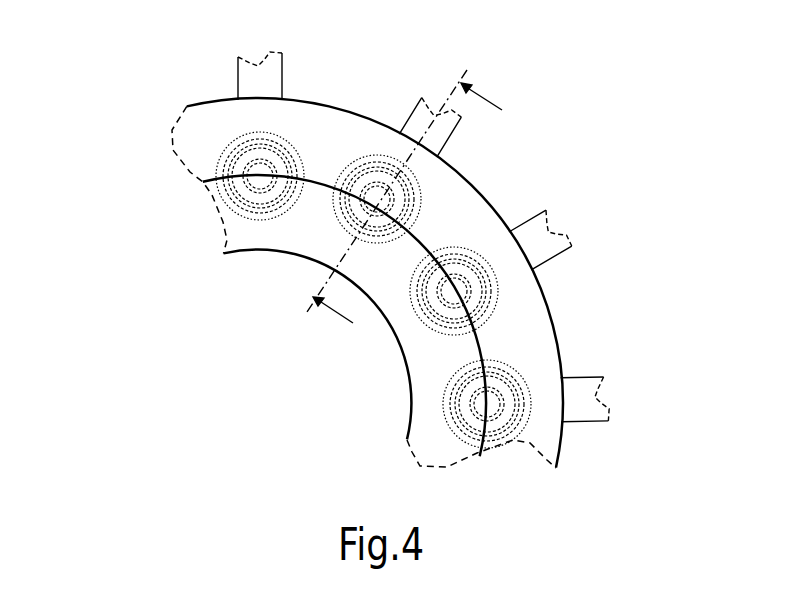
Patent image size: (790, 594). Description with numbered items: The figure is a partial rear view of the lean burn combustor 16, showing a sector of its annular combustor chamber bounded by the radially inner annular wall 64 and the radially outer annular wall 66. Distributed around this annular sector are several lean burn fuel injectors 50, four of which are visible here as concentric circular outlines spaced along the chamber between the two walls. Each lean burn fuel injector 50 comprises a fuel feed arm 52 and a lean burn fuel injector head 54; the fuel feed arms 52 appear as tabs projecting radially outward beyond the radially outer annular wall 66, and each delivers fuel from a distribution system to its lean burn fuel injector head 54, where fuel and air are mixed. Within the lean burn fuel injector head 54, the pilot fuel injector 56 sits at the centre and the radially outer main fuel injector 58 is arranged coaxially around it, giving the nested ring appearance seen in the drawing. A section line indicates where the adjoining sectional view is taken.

The lean burn combustor 16 is at (690, 123).
The lean burn fuel injector 50 is at (427, 194).
The fuel feed arm 52 is at (247, 82).
The lean burn fuel injector head 54 is at (201, 212).
The pilot fuel injector 56 is at (480, 307).
The main fuel injector 58 is at (490, 289).
The radially inner annular wall 64 is at (260, 253).
The radially outer annular wall 66 is at (557, 347).